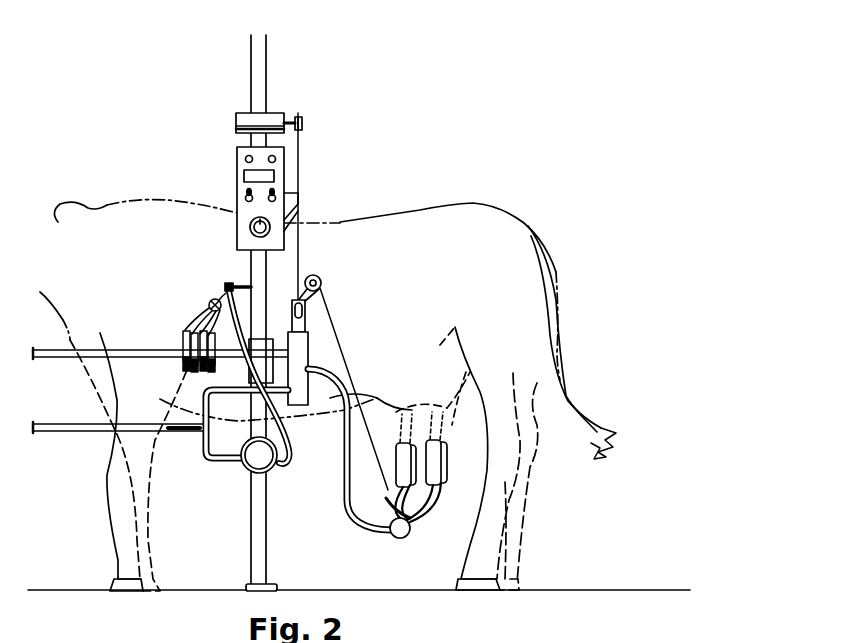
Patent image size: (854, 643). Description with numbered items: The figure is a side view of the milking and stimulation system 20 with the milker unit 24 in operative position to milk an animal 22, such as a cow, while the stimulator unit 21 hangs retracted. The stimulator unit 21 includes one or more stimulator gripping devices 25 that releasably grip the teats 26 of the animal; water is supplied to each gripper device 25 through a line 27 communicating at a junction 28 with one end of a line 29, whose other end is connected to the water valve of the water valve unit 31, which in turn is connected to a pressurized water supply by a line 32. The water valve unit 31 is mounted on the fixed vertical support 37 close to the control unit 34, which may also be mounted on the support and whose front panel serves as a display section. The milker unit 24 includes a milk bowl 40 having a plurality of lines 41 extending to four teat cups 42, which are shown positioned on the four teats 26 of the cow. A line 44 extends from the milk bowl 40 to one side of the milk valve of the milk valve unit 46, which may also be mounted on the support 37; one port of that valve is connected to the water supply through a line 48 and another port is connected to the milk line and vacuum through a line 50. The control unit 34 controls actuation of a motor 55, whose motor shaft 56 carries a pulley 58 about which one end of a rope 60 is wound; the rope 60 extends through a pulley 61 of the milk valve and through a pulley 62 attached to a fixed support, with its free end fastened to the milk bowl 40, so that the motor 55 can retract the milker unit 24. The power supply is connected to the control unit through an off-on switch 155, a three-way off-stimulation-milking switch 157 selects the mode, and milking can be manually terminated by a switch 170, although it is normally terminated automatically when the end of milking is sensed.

The system 20 is at (227, 176).
The stimulator unit 21 is at (177, 325).
The animal 22 is at (466, 204).
The milker unit 24 is at (380, 512).
The stimulator gripping device 25 is at (183, 335).
The teats 26 is at (408, 409).
The line 27 is at (210, 306).
The junction 28 is at (223, 289).
The line 29 is at (293, 441).
The water valve unit 31 is at (278, 465).
The line 32 is at (212, 462).
The control unit 34 is at (237, 160).
The fixed vertical support 37 is at (267, 60).
The milk bowl 40 is at (401, 539).
The lines 41 is at (432, 500).
The teat cups 42 is at (441, 463).
The line 44 is at (345, 505).
The milk valve unit 46 is at (300, 406).
The line 48 is at (203, 391).
The line 50 is at (49, 349).
The motor 55 is at (244, 112).
The motor shaft 56 is at (291, 122).
The pulley 58 is at (304, 124).
The rope 60 is at (300, 165).
The pulley 61 is at (305, 306).
The pulley 62 is at (317, 278).
The off-on switch 155 is at (298, 197).
The three-way switch 157 is at (250, 231).
The switch 170 is at (245, 197).